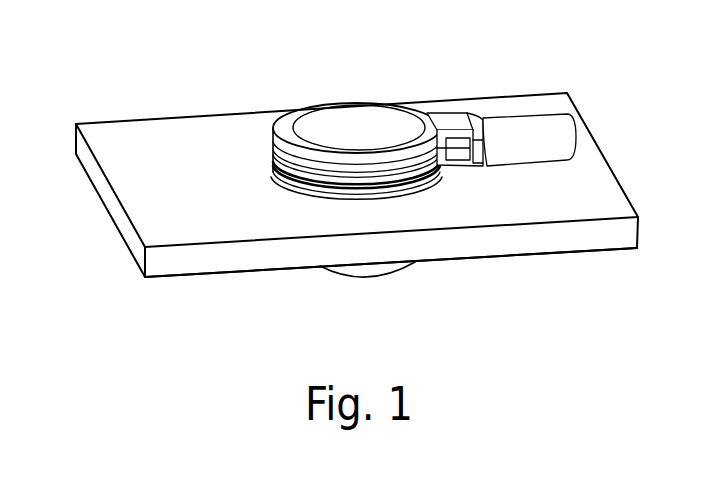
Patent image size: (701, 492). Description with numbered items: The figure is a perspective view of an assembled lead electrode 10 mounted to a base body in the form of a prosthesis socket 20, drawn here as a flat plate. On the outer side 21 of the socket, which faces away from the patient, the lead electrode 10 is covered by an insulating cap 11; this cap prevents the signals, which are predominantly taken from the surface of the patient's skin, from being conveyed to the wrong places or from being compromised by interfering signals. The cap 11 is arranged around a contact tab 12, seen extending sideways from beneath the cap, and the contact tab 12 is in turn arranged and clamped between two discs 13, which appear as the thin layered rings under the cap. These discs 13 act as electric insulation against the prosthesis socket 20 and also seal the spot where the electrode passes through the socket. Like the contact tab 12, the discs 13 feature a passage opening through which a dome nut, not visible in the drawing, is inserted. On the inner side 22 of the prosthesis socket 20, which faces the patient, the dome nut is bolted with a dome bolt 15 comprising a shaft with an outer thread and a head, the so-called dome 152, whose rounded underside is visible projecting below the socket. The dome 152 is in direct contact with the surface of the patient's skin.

The lead electrode 10 is at (371, 193).
The insulating cap 11 is at (358, 117).
The contact tab 12 is at (457, 150).
The discs 13 is at (303, 185).
The dome bolt 15 is at (381, 250).
The dome 152 is at (380, 267).
The prosthesis socket 20 is at (355, 208).
The outer side 21 is at (130, 135).
The inner side 22 is at (228, 286).